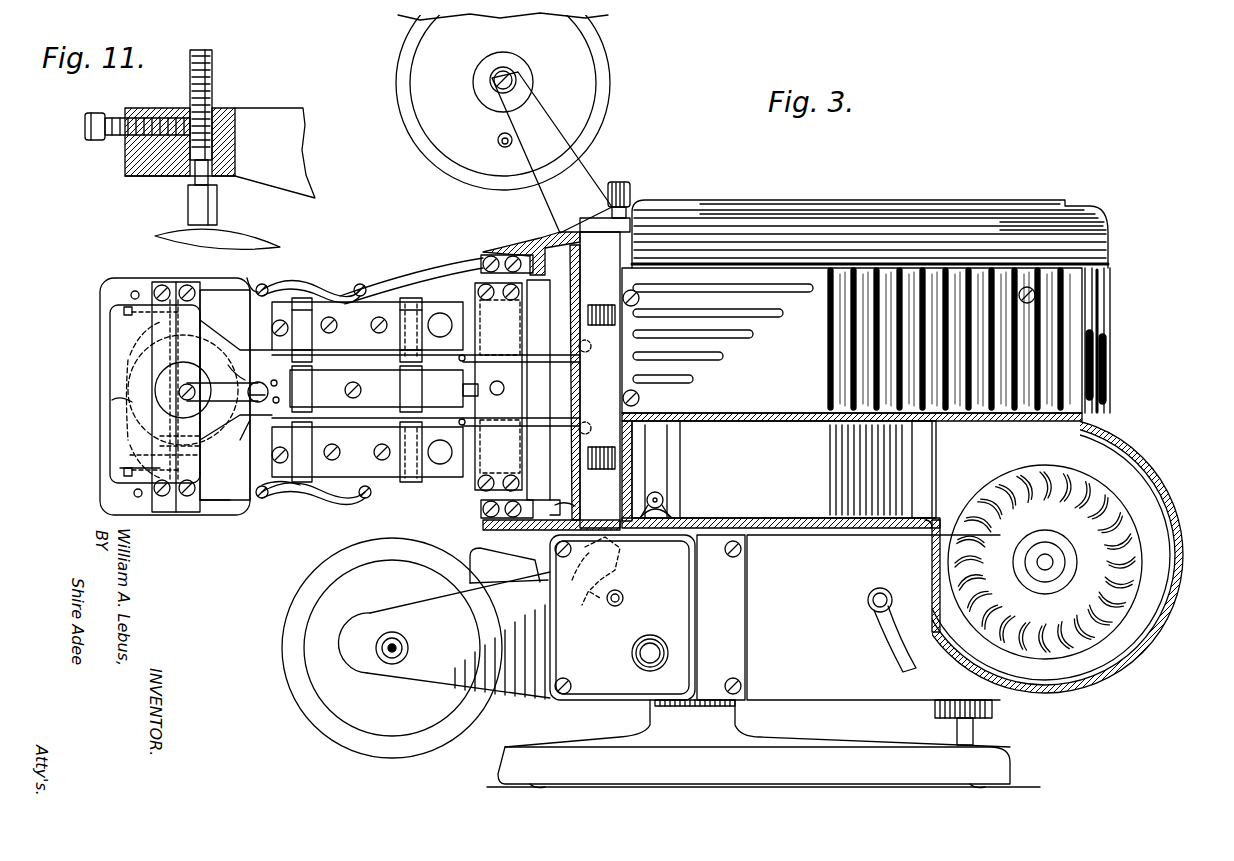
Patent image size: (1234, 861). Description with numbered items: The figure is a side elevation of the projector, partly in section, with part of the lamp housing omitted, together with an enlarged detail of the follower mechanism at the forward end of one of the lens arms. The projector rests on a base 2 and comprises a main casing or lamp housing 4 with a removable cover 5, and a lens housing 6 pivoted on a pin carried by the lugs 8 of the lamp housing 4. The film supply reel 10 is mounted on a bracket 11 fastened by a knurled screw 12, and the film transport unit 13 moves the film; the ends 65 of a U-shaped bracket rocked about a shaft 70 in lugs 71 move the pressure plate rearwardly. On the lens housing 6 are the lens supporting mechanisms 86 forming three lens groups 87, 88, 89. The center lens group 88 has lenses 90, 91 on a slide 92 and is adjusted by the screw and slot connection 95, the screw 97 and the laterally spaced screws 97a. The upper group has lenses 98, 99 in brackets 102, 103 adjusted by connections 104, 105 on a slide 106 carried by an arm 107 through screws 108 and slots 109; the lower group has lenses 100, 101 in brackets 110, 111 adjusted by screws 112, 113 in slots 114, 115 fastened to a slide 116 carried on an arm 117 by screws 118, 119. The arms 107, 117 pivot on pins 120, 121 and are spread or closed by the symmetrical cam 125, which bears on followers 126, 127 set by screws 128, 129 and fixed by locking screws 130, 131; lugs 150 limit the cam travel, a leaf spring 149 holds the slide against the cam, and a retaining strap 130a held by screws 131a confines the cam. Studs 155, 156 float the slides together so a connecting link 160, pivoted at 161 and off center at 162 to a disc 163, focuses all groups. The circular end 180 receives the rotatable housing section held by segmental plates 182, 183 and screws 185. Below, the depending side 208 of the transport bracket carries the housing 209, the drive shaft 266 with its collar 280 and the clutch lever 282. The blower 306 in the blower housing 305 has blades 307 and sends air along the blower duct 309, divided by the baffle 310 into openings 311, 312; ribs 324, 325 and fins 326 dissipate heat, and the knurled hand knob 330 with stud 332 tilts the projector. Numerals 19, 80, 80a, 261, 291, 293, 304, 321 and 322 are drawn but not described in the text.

In FIG. 3, the base 2 is at (862, 746).
In FIG. 3, the main casing or lamp housing 4 is at (838, 198).
In FIG. 3, the removable cover 5 is at (1000, 236).
In FIG. 3, the lens housing 6 is at (100, 278).
In FIG. 3, the lugs 8 is at (603, 305).
In FIG. 3, the film supply reel 10 is at (606, 77).
In FIG. 3, the bracket 11 is at (588, 174).
In FIG. 3, the knurled screw 12 is at (632, 190).
In FIG. 3, the film transport unit 13 is at (528, 704).
In FIG. 3, the reel flange 19 is at (300, 592).
In FIG. 3, the ends of the U-shaped bracket 65 is at (662, 462).
In FIG. 3, the shaft 70 is at (664, 497).
In FIG. 3, the lugs 71 is at (668, 508).
In FIG. 3, the linkage 80 is at (628, 535).
In FIG. 3, the link arm 80a is at (573, 578).
In FIG. 3, the lens supporting mechanisms 86 is at (262, 292).
In FIG. 3, the lens group 87 is at (432, 282).
In FIG. 3, the center lens group 88 is at (367, 356).
In FIG. 3, the lens group 89 is at (260, 476).
In FIG. 3, the lens 90 is at (376, 389).
In FIG. 3, the lens 91 is at (474, 356).
In FIG. 3, the slide 92 is at (262, 412).
In FIG. 3, the screw and slot connection 95 is at (362, 389).
In FIG. 3, the screw 97 is at (468, 380).
In FIG. 3, the laterally spaced screws 97a is at (270, 378).
In FIG. 3, the lens 98 is at (272, 340).
In FIG. 3, the lens 99 is at (412, 310).
In FIG. 3, the lens 100 is at (313, 493).
In FIG. 3, the lens 101 is at (440, 465).
In FIG. 3, the bracket 102 is at (305, 305).
In FIG. 3, the bracket 103 is at (372, 310).
In FIG. 3, the screw and slot connection 104 is at (332, 318).
In FIG. 3, the screw and slot connection 105 is at (382, 318).
In FIG. 3, the slide 106 is at (472, 278).
In FIG. 11, the arm 107 is at (275, 110).
In FIG. 3, the arm 107 is at (362, 327).
In FIG. 3, the screws 108 is at (272, 330).
In FIG. 3, the slots 109 is at (408, 300).
In FIG. 3, the bracket 110 is at (345, 480).
In FIG. 3, the bracket 111 is at (386, 464).
In FIG. 3, the screw 112 is at (332, 464).
In FIG. 3, the screw 113 is at (372, 480).
In FIG. 3, the slot 114 is at (367, 419).
In FIG. 3, the slot 115 is at (473, 419).
In FIG. 3, the slide 116 is at (455, 480).
In FIG. 3, the arm 117 is at (360, 395).
In FIG. 3, the screw 118 is at (272, 452).
In FIG. 3, the screw 119 is at (408, 462).
In FIG. 3, the pin 120 is at (588, 346).
In FIG. 3, the pin 121 is at (590, 420).
In FIG. 11, the symmetrical cam 125 is at (240, 240).
In FIG. 3, the symmetrical cam 125 is at (118, 402).
In FIG. 11, the follower 126 is at (188, 203).
In FIG. 3, the follower 126 is at (135, 331).
In FIG. 3, the follower 127 is at (130, 460).
In FIG. 11, the screw 128 is at (214, 68).
In FIG. 3, the screw 128 is at (174, 287).
In FIG. 3, the screw 129 is at (176, 518).
In FIG. 11, the locking screw 130 is at (95, 114).
In FIG. 3, the locking screw 130 is at (110, 311).
In FIG. 3, the vertical retaining strap 130a is at (160, 442).
In FIG. 3, the locking screw 131 is at (120, 470).
In FIG. 3, the screws 131a is at (160, 287).
In FIG. 3, the leaf spring 149 is at (300, 490).
In FIG. 3, the lugs 150 is at (128, 358).
In FIG. 3, the stud 155 is at (462, 358).
In FIG. 3, the stud 156 is at (462, 420).
In FIG. 3, the connecting link 160 is at (227, 391).
In FIG. 3, the pivot 161 is at (238, 380).
In FIG. 3, the off-center pivotal connection 162 is at (183, 380).
In FIG. 3, the disc 163 is at (150, 388).
In FIG. 3, the circular end 180 is at (568, 275).
In FIG. 3, the segmental plate 182 is at (548, 282).
In FIG. 3, the segmental plate 183 is at (556, 500).
In FIG. 3, the screws 185 is at (575, 506).
In FIG. 3, the depending side of the bracket 208 is at (745, 620).
In FIG. 3, the housing 209 is at (642, 617).
In FIG. 3, the control knob 261 is at (640, 652).
In FIG. 3, the shaft 266 is at (624, 599).
In FIG. 3, the collar 280 is at (490, 582).
In FIG. 3, the lever 282 is at (528, 582).
In FIG. 3, the reel hub 291 is at (378, 647).
In FIG. 3, the link 293 is at (583, 607).
In FIG. 3, the fan hub 304 is at (1046, 560).
In FIG. 3, the blower housing 305 is at (1150, 466).
In FIG. 3, the blower 306 is at (1162, 598).
In FIG. 3, the blades 307 is at (1065, 478).
In FIG. 3, the blower duct 309 is at (778, 432).
In FIG. 3, the dividing baffle 310 is at (845, 452).
In FIG. 3, the lamp housing opening 311 is at (934, 442).
In FIG. 3, the lamp housing opening 312 is at (680, 444).
In FIG. 3, the handle 321 is at (1104, 330).
In FIG. 3, the side wall 322 is at (1096, 285).
In FIG. 3, the ribs 324 is at (790, 302).
In FIG. 3, the ribs 325 is at (880, 370).
In FIG. 3, the ribbing or cooling fins 326 is at (948, 204).
In FIG. 3, the knurled hand knob 330 is at (995, 708).
In FIG. 3, the stud 332 is at (975, 730).